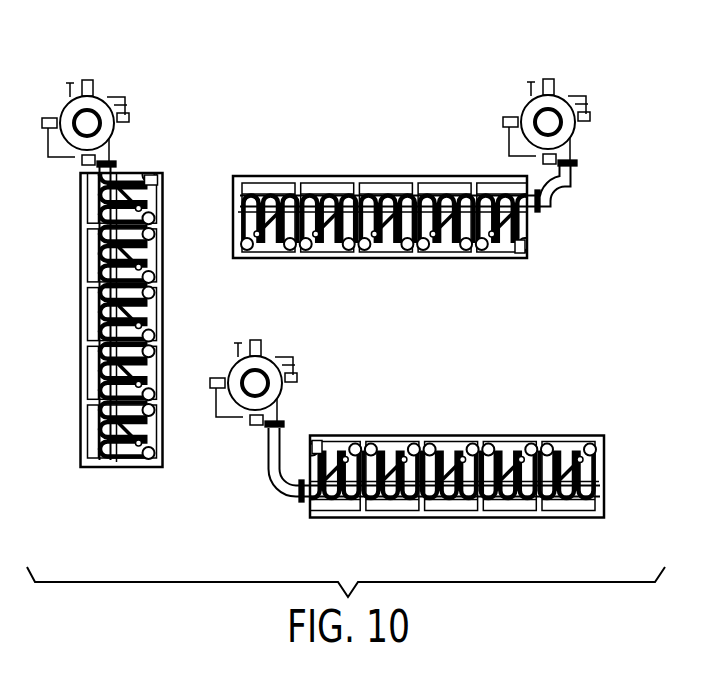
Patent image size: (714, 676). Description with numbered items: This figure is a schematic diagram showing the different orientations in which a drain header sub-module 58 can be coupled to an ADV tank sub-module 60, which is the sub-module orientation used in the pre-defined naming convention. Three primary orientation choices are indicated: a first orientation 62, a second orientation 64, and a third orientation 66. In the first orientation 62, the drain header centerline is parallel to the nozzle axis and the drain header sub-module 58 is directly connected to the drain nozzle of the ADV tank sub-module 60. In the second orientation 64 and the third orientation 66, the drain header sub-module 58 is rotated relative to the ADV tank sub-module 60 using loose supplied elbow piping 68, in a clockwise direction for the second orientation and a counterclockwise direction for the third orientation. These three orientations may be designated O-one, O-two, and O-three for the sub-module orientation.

The drain header sub-module 58 is at (163, 232).
The ADV tank sub-module 60 is at (70, 112).
The orientation 1 62 is at (74, 308).
The orientation 2 64 is at (387, 156).
The orientation 3 66 is at (463, 419).
The loose supplied elbow piping 68 is at (563, 199).